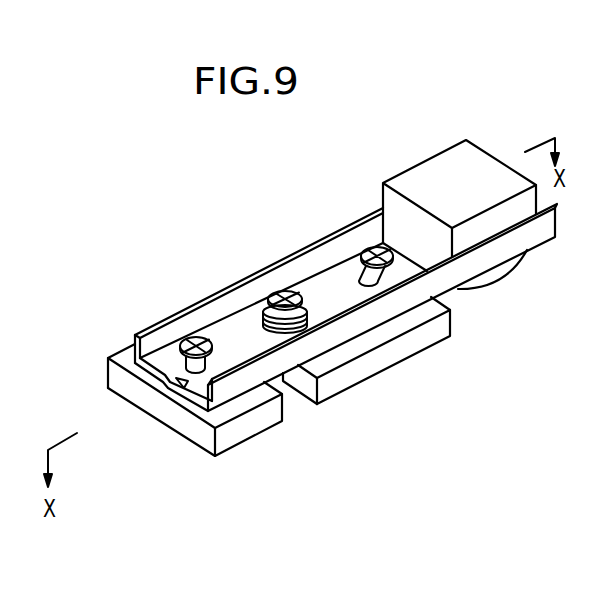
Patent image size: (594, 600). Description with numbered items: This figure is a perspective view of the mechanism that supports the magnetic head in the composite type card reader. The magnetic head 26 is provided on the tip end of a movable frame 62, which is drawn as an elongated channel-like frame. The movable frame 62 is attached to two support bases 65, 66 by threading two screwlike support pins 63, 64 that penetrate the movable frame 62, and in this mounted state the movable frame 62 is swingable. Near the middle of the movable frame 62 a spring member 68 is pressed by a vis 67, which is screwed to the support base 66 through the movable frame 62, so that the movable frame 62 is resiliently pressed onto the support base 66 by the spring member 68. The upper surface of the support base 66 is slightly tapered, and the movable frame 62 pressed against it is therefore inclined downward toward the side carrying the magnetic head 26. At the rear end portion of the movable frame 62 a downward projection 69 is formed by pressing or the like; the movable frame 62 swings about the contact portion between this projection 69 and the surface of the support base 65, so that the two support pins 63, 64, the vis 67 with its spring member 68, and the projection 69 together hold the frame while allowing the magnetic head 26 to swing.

The magnetic head 26 is at (490, 162).
The movable frame 62 is at (308, 248).
The support pin 63 is at (193, 336).
The support pin 64 is at (365, 247).
The support base 65 is at (262, 427).
The support base 66 is at (397, 357).
The vis 67 is at (280, 293).
The spring member 68 is at (267, 312).
The downward projection 69 is at (173, 394).